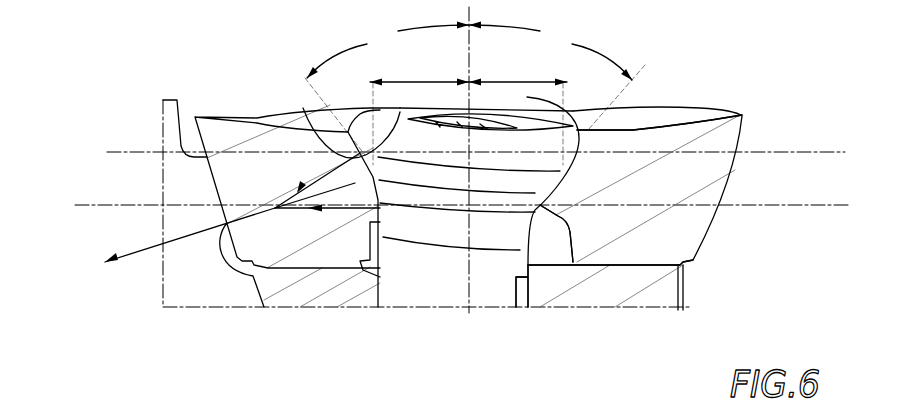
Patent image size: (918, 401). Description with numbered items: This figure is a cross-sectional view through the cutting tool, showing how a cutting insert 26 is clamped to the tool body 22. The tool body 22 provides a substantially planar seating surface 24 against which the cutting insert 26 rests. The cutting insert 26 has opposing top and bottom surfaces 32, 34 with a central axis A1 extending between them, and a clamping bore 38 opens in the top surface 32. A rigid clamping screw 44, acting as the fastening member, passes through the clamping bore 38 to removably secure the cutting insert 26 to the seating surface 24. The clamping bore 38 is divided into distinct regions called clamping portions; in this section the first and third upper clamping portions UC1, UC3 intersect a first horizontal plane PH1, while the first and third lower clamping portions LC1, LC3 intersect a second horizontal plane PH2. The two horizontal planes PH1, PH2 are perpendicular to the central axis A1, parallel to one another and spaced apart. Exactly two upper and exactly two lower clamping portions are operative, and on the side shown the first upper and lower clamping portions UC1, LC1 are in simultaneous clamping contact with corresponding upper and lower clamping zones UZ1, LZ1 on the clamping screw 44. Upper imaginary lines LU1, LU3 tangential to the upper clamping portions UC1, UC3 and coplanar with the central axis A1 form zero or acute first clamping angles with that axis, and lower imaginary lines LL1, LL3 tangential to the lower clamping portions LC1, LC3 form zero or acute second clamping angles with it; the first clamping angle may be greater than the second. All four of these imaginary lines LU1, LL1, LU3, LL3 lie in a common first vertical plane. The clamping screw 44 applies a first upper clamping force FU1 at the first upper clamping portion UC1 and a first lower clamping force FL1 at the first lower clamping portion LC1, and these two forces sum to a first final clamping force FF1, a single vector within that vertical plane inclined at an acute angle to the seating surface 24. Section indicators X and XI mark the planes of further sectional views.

The tool body 22 is at (177, 269).
The seating surface 24 is at (646, 260).
The cutting insert 26 is at (671, 168).
The top surface 32 is at (647, 116).
The bottom surface 34 is at (613, 268).
The clamping bore 38 is at (545, 222).
The clamping screw 44 is at (504, 293).
The upper clamping zone UZ1 is at (303, 108).
The lower clamping zone LZ1 is at (380, 207).
The first upper clamping portion UC1 is at (397, 114).
The third upper clamping portion UC3 is at (530, 197).
The first lower clamping portion LC1 is at (380, 208).
The third lower clamping portion LC3 is at (572, 218).
The first upper imaginary line LU1 is at (288, 58).
The third upper imaginary line LU3 is at (648, 56).
The first lower imaginary line LL1 is at (349, 88).
The third lower imaginary line LL3 is at (589, 90).
The first upper clamping force FU1 is at (302, 183).
The first lower clamping force FL1 is at (327, 211).
The first final clamping force FF1 is at (168, 244).
The central axis A1 is at (463, 341).
The first horizontal plane PH1 is at (805, 143).
The second horizontal plane PH2 is at (845, 196).
The section X is at (127, 152).
The section XI is at (92, 205).